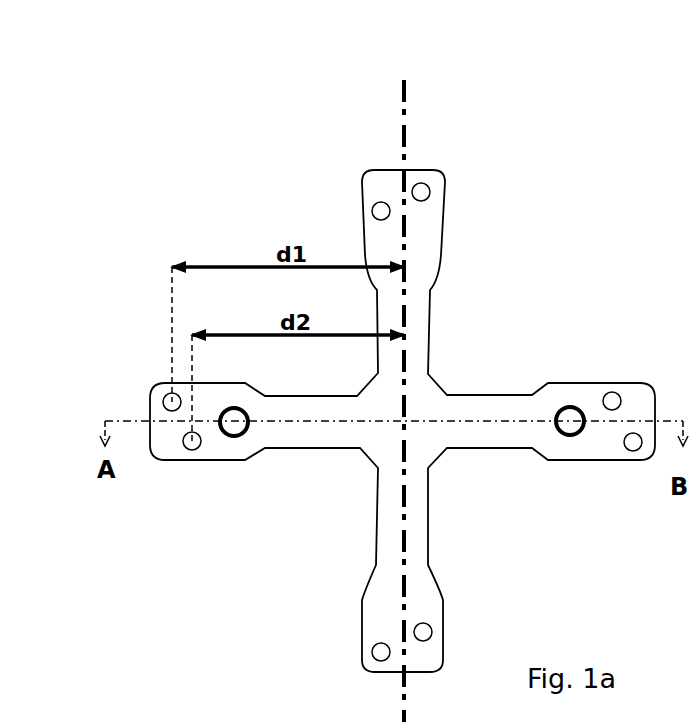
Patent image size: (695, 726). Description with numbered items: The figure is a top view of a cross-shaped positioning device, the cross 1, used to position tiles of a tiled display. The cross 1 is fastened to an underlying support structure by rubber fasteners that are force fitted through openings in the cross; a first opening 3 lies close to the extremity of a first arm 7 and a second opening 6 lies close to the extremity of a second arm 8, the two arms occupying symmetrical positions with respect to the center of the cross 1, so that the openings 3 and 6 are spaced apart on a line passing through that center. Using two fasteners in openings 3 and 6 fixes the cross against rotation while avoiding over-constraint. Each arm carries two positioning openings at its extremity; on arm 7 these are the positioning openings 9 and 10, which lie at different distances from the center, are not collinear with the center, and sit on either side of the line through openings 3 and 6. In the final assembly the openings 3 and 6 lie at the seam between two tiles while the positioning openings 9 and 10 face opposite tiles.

The cross 1 is at (263, 167).
The first opening 3 is at (233, 440).
The second opening 6 is at (576, 405).
The first arm 7 is at (309, 466).
The second arm 8 is at (529, 463).
The positioning opening 9 is at (163, 404).
The positioning opening 10 is at (186, 450).